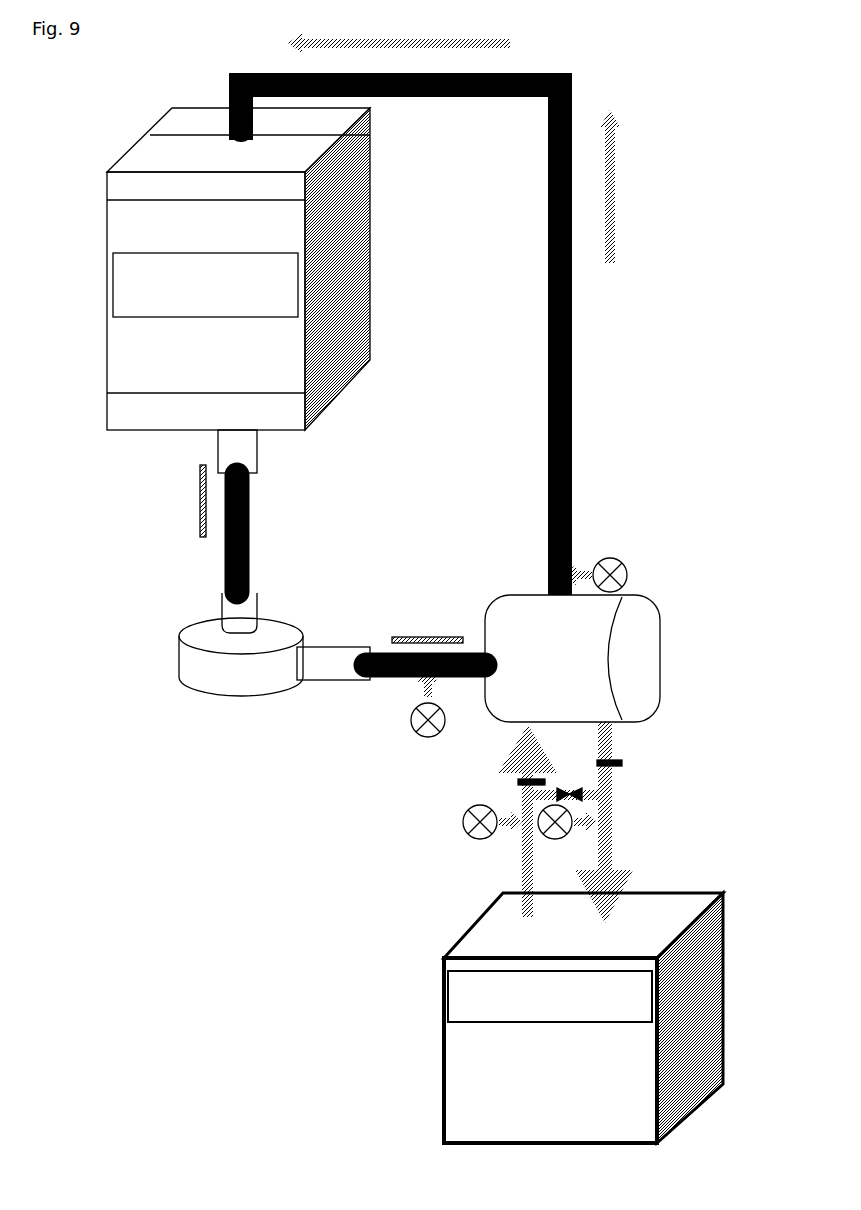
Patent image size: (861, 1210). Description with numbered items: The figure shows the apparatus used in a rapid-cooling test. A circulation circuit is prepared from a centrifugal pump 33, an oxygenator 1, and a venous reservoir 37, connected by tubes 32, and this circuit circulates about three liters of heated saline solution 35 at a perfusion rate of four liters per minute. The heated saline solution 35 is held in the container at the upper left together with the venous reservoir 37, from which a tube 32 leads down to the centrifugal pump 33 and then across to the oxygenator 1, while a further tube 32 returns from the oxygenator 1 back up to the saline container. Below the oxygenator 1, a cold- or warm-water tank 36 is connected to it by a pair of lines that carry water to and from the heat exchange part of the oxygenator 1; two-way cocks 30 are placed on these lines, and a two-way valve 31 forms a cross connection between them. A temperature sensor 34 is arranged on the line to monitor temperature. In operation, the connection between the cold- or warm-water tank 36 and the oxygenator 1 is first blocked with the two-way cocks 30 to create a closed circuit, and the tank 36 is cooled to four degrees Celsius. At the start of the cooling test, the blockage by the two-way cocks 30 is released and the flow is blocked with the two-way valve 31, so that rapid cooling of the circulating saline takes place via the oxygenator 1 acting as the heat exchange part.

The oxygenator 1 is at (622, 667).
The two-way cock 30 is at (518, 782).
The two-way valve 31 is at (585, 800).
The tube 32 is at (228, 498).
The centrifugal pump 33 is at (197, 660).
The temperature sensor 34 is at (463, 832).
The heated saline solution 35 is at (375, 213).
The cold- or warm-water tank 36 is at (583, 1018).
The venous reservoir 37 is at (205, 285).